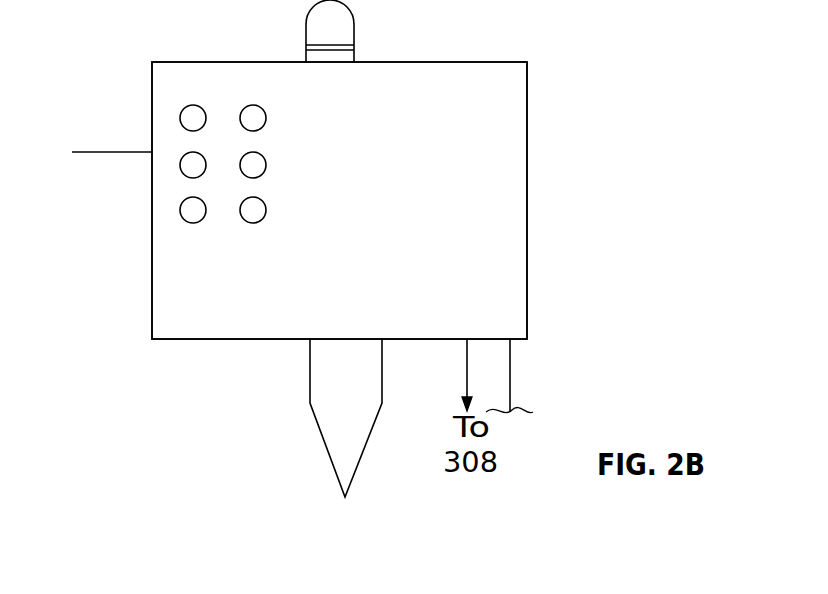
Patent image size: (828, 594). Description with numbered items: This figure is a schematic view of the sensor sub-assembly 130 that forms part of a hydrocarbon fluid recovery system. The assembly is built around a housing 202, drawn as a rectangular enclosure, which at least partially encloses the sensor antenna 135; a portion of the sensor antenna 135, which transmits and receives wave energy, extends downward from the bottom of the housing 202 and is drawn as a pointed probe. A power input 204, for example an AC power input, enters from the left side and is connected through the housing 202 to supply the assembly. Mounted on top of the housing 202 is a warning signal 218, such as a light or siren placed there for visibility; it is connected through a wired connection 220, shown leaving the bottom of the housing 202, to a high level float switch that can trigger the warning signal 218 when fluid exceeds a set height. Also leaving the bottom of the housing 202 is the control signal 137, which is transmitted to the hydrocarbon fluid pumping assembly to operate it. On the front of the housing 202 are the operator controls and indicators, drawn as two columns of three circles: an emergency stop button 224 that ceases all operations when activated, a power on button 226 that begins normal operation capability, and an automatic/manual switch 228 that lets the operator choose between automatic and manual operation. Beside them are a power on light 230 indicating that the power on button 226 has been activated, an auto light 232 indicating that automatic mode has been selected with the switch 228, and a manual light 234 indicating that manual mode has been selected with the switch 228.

The sensor sub-assembly 130 is at (521, 42).
The housing 202 is at (528, 143).
The power input 204 is at (103, 150).
The warning signal 218 is at (355, 33).
The emergency stop button 224 is at (192, 105).
The power on button 226 is at (180, 165).
The automatic/manual switch 228 is at (180, 210).
The power on light 230 is at (266, 118).
The auto light 232 is at (266, 165).
The manual light 234 is at (266, 210).
The sensor antenna 135 is at (327, 448).
The control signal 137 is at (465, 363).
The wired connection 220 is at (511, 360).